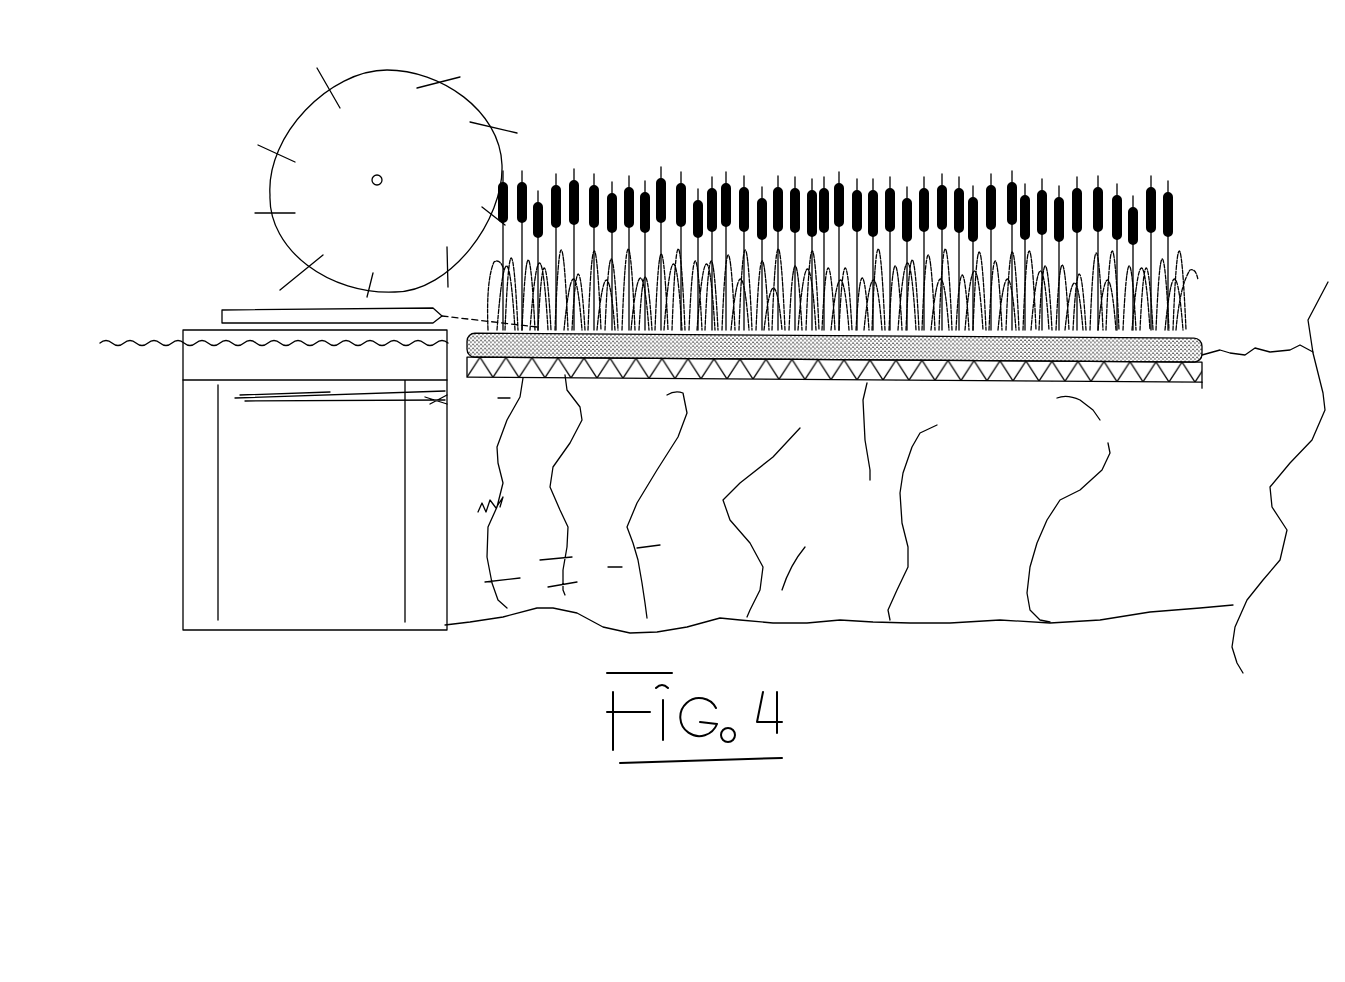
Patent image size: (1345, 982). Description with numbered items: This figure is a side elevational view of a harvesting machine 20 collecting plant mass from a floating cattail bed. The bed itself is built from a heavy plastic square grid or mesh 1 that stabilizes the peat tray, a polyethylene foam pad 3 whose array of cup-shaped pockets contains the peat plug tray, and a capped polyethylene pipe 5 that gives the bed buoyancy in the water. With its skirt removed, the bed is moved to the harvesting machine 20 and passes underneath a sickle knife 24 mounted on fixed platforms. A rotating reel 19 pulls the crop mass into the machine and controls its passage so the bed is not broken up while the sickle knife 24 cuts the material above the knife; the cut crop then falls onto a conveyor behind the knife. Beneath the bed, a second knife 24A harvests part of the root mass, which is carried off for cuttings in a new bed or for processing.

The harvesting machine 20 is at (515, 79).
The rotating reel 19 is at (308, 135).
The sickle knife 24 is at (252, 297).
The knife 24A is at (278, 400).
The polyethylene pipe 5 is at (1193, 342).
The heavy plastic square grid or mesh 1 is at (968, 382).
The polyethylene foam pad 3 is at (823, 375).